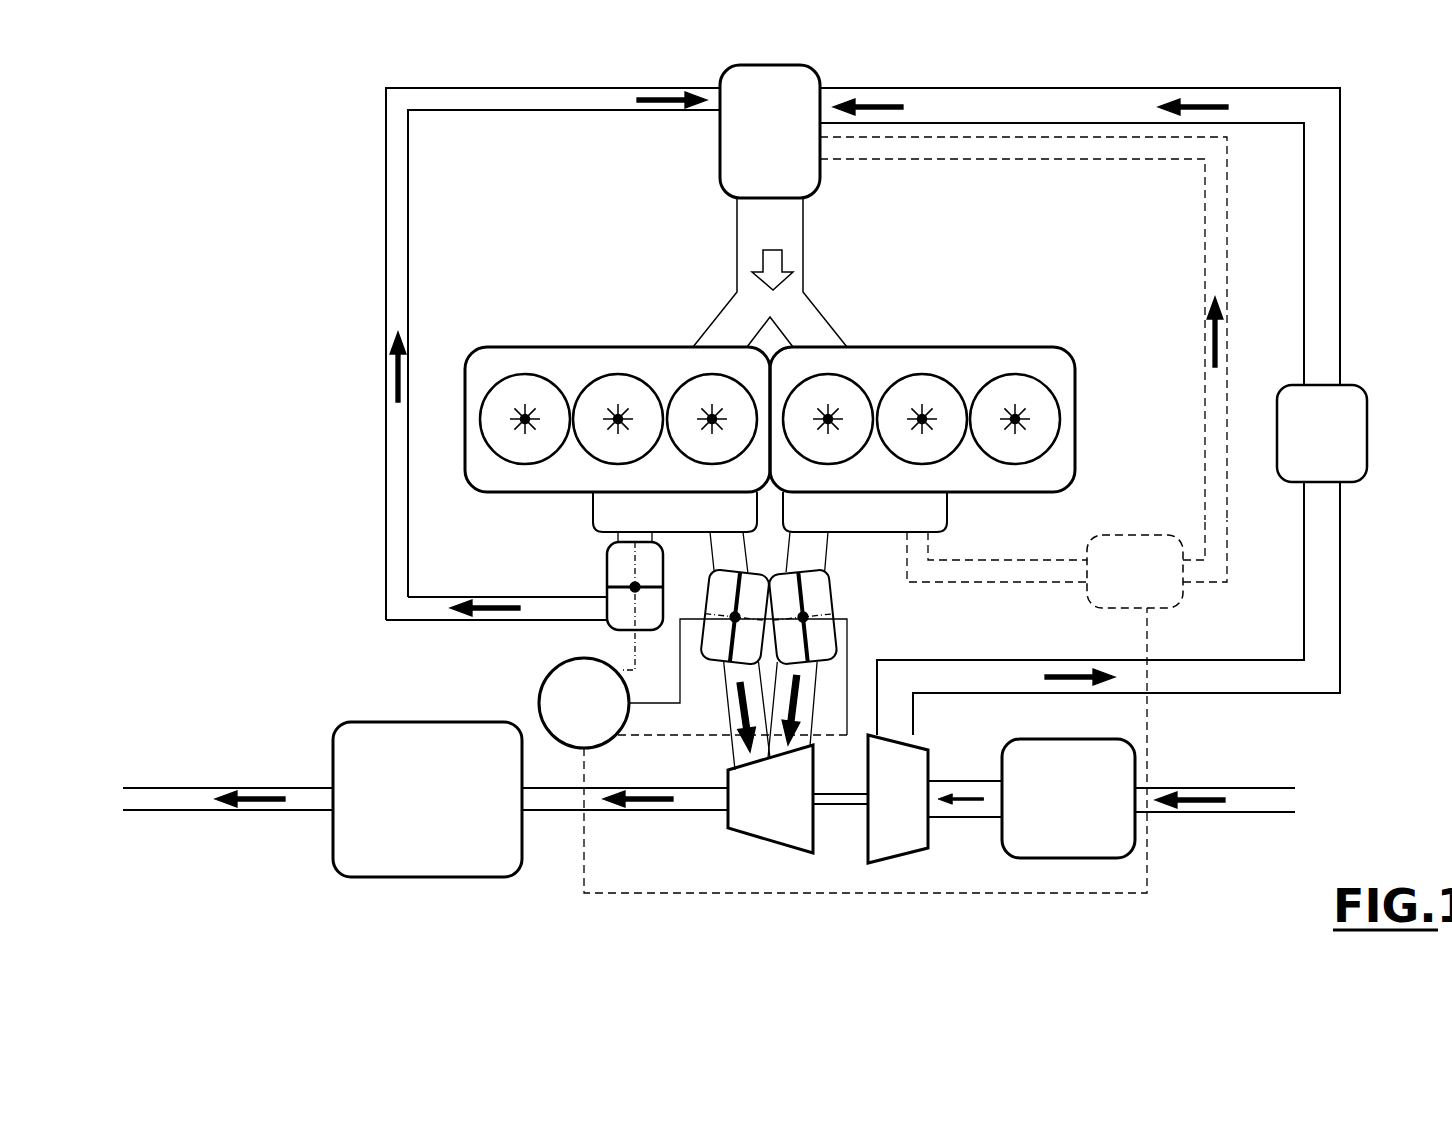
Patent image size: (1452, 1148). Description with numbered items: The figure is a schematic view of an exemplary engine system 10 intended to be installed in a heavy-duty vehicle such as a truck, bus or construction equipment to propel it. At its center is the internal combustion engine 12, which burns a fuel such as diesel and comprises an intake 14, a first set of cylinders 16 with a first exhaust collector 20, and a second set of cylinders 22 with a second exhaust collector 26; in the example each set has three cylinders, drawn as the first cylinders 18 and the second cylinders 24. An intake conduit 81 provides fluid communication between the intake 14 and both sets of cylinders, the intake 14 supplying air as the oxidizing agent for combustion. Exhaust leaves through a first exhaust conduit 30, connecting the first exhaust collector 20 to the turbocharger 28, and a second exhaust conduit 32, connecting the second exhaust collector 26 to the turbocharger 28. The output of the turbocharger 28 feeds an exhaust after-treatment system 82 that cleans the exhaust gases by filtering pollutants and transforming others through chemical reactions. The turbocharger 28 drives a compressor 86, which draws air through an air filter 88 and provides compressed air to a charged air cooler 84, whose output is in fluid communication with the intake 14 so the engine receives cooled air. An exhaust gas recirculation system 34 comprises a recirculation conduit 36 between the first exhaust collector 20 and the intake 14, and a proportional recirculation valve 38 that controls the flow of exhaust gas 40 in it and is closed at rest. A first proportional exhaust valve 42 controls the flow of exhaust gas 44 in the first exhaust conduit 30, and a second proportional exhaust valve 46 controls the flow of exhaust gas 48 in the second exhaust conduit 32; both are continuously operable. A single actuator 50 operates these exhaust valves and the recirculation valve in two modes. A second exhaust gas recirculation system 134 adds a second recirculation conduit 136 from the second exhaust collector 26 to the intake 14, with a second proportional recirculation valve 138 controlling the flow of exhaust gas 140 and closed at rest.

The engine system 10 is at (333, 200).
The internal combustion engine 12 is at (962, 182).
The intake 14 is at (793, 175).
The first set of cylinders 16 is at (1002, 270).
The first cylinder 18 is at (683, 377).
The first exhaust collector 20 is at (727, 527).
The second set of cylinders 22 is at (1060, 318).
The second cylinder 24 is at (1000, 393).
The second exhaust collector 26 is at (928, 512).
The turbocharger 28 is at (798, 799).
The first exhaust conduit 30 is at (747, 680).
The second exhaust conduit 32 is at (807, 687).
The exhaust gas recirculation system 34 is at (290, 578).
The recirculation conduit 36 is at (400, 567).
The proportional recirculation valve 38 is at (622, 615).
The flow of exhaust gas 40 is at (396, 385).
The first proportional exhaust valve 42 is at (745, 587).
The flow of exhaust gas 44 is at (737, 708).
The second proportional exhaust valve 46 is at (822, 595).
The flow of exhaust gas 48 is at (797, 707).
The actuator 50 is at (843, 750).
The intake conduit 81 is at (752, 258).
The exhaust after-treatment system 82 is at (425, 799).
The charged air cooler 84 is at (1322, 433).
The compressor 86 is at (935, 799).
The air filter 88 is at (1148, 798).
The second exhaust gas recirculation system 134 is at (1405, 605).
The second recirculation conduit 136 is at (1215, 532).
The second proportional recirculation valve 138 is at (1165, 590).
The flow of exhaust gas 140 is at (1227, 340).